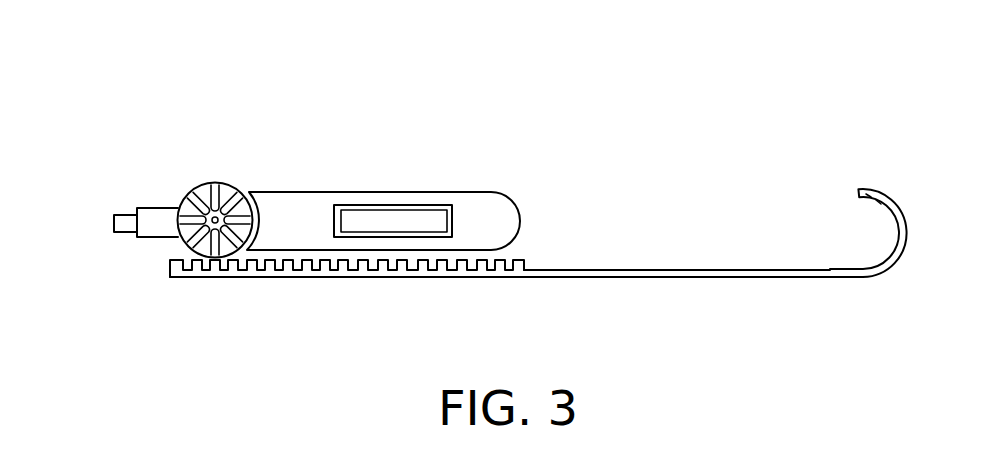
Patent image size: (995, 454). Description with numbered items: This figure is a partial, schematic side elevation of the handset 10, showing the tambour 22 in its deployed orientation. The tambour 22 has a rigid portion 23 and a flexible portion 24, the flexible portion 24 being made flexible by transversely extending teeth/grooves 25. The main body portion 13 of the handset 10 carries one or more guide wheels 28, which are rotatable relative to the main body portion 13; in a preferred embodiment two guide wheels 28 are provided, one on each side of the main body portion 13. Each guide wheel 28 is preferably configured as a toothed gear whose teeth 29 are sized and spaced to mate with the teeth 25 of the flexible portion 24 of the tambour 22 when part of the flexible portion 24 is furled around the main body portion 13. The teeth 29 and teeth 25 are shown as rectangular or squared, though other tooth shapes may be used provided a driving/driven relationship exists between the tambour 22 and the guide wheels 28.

The handset 10 is at (178, 82).
The main body portion 13 is at (475, 217).
The tambour 22 is at (793, 157).
The rigid portion 23 is at (520, 285).
The flexible portion 24 is at (520, 285).
The teeth/grooves 25 is at (170, 260).
The guide wheel 28 is at (170, 183).
The teeth 29 is at (212, 197).